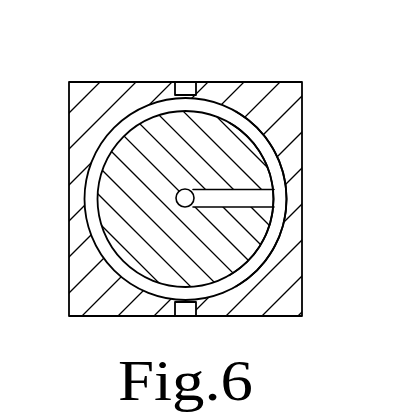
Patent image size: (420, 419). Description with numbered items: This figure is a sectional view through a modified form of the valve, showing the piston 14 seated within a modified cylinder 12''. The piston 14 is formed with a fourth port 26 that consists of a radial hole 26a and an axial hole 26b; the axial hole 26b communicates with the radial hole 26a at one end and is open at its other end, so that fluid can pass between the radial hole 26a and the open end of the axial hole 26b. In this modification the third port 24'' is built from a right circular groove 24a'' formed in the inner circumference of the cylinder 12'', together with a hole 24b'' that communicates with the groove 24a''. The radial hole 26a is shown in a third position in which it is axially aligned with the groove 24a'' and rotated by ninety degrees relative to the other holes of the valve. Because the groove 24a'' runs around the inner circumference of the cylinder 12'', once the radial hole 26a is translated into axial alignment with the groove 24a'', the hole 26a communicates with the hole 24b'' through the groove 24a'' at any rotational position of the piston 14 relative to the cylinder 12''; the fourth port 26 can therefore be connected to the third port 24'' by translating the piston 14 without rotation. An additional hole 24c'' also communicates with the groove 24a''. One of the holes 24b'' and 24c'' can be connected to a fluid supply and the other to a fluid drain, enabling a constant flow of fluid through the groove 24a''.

The modified cylinder 12'' is at (210, 170).
The piston 14 is at (127, 208).
The third port 24'' is at (245, 191).
The right circular groove 24a'' is at (306, 199).
The hole 24b'' is at (213, 62).
The additional hole 24c'' is at (225, 327).
The fourth port 26 is at (211, 198).
The radial hole 26a is at (246, 184).
The axial hole 26b is at (182, 190).